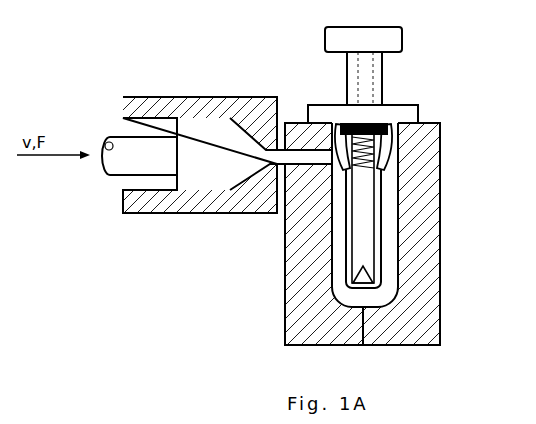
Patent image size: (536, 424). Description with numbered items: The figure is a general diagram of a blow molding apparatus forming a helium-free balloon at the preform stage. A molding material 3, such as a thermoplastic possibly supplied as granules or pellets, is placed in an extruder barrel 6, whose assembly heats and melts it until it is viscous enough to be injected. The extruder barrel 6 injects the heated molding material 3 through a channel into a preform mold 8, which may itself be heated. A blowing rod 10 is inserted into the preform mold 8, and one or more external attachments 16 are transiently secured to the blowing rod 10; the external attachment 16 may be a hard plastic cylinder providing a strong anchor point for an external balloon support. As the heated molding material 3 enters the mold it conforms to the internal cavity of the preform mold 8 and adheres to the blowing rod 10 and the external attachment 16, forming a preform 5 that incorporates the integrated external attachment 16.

The molding material 3 is at (242, 150).
The preform 5 is at (390, 283).
The extruder barrel 6 is at (197, 86).
The preform mold 8 is at (278, 313).
The blowing rod 10 is at (390, 80).
The external attachment 16 is at (350, 122).